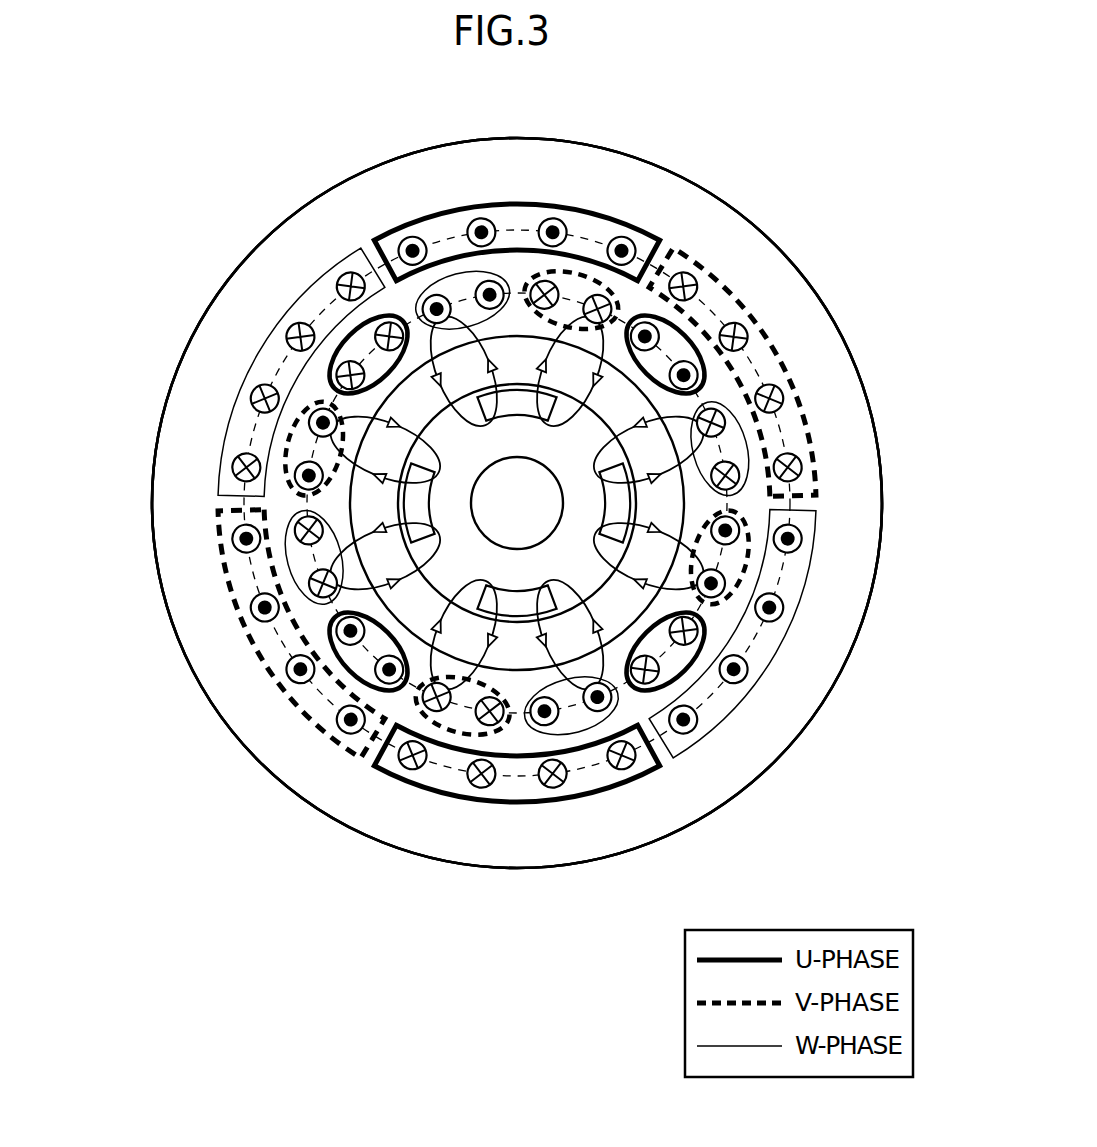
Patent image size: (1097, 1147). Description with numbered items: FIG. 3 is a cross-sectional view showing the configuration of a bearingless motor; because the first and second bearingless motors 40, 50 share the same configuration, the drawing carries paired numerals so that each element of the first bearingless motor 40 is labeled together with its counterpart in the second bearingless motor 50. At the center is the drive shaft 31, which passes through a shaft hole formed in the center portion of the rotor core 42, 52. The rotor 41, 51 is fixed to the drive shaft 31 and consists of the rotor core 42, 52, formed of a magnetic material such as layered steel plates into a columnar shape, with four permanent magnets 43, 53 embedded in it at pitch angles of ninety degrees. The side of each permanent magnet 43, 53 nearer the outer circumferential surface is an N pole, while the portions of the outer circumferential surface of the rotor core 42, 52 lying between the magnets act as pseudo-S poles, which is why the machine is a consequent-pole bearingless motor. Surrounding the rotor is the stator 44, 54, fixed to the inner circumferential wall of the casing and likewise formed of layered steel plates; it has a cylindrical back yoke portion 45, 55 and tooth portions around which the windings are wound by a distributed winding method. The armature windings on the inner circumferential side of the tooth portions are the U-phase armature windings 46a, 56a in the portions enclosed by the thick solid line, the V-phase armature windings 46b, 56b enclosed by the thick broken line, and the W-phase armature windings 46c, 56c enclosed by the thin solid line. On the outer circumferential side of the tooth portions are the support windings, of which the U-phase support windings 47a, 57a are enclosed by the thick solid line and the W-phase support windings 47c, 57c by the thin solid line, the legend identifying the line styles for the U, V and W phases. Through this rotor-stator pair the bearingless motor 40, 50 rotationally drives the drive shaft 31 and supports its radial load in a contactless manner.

The drive shaft 31 is at (563, 503).
The first bearingless motor 40 is at (517, 467).
The second bearingless motor 50 is at (775, 152).
The rotor 41 is at (639, 477).
The stator 51 is at (612, 422).
The rotor core 42 is at (630, 404).
The rotor 52 is at (606, 415).
The permanent magnet 43 is at (682, 498).
The permanent magnet 53 is at (637, 467).
The stator 44 is at (517, 482).
The stator core 54 is at (674, 170).
The back yoke portion 45 is at (517, 466).
The yoke 55 is at (598, 168).
The U-phase armature windings 46a is at (452, 569).
The inner U-phase coil 56a is at (372, 684).
The V-phase armature windings 46b is at (517, 586).
The inner V-phase coil 56b is at (492, 727).
The W-phase armature windings 46c is at (517, 586).
The inner W-phase coil 56c is at (598, 713).
The U-phase support windings 47a is at (516, 439).
The outer U-phase coil 57a is at (552, 206).
The W-phase support windings 47c is at (445, 503).
The outer W-phase coil 57c is at (252, 383).